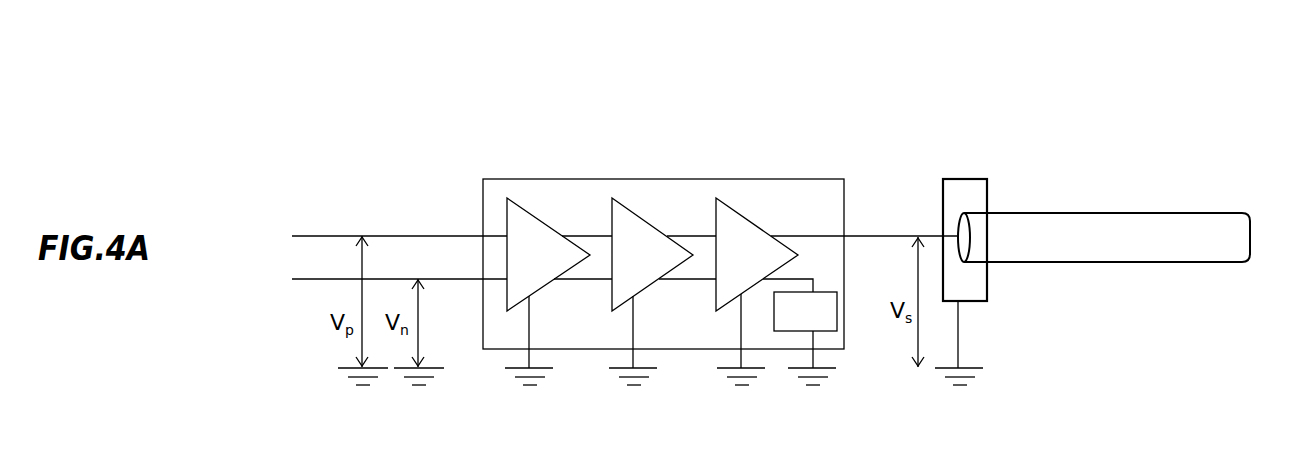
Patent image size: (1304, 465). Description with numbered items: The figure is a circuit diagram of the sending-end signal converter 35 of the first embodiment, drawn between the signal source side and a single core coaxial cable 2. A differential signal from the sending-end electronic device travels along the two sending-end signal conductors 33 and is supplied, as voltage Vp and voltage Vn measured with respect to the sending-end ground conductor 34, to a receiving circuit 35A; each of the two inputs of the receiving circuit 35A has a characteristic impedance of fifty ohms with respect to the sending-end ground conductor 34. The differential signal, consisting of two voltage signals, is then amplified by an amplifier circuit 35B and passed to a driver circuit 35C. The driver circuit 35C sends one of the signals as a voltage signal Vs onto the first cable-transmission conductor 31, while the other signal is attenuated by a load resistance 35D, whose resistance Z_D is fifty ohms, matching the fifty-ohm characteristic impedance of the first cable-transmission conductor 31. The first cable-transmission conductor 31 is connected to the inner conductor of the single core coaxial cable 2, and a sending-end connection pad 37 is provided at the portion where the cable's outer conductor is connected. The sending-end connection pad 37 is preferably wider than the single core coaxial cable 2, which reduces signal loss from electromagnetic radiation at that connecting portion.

The single core coaxial cable 2 is at (1081, 189).
The first cable-transmission conductor 31 is at (900, 237).
The sending-end signal conductors 33 is at (392, 265).
The sending-end ground conductor 34 is at (655, 402).
The sending-end signal converter 35 is at (791, 243).
The receiving circuit 35A is at (532, 230).
The amplifier circuit 35B is at (633, 237).
The driver circuit 35C is at (748, 243).
The load resistance 35D is at (837, 313).
The sending-end connection pad 37 is at (966, 285).